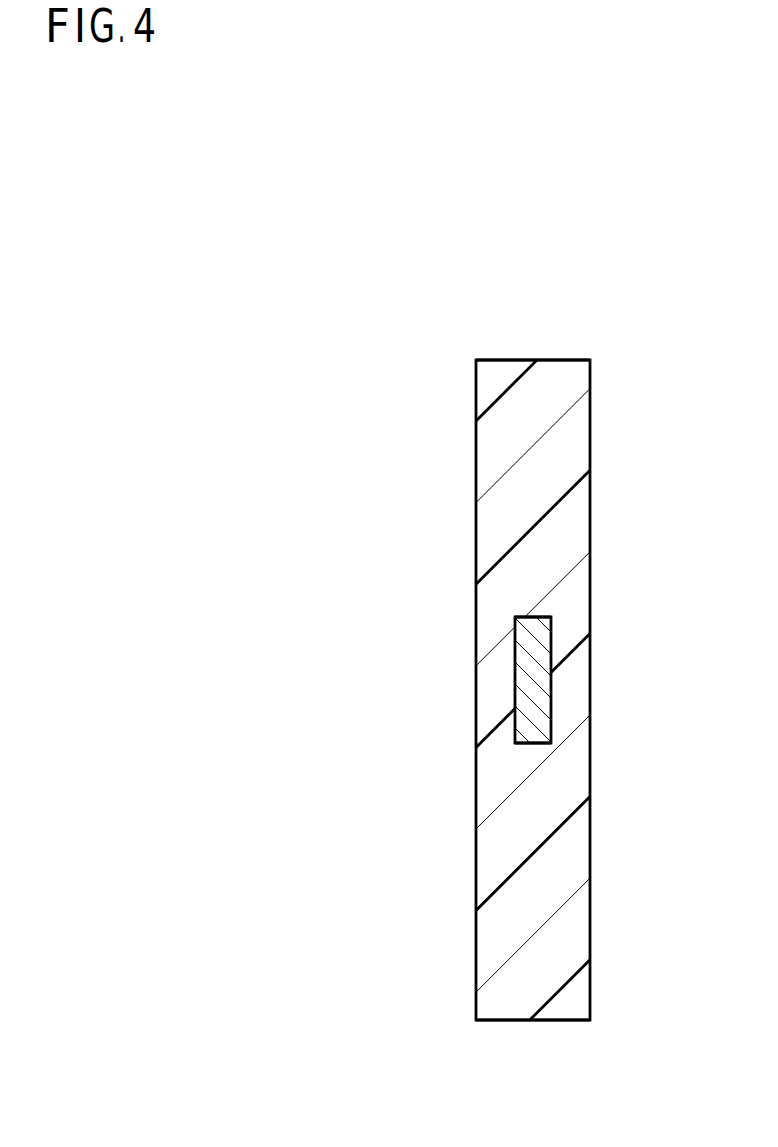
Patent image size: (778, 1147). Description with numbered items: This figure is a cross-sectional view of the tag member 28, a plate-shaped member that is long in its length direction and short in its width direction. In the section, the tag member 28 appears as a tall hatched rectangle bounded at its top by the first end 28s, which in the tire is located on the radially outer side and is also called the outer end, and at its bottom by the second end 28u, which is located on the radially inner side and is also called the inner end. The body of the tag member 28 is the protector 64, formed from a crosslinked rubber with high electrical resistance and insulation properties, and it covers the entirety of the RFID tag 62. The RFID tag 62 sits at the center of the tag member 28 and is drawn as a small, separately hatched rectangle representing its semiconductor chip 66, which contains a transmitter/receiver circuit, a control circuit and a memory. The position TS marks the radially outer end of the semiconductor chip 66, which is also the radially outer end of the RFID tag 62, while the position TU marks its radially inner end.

The tag member 28 is at (624, 320).
The first end 28s is at (519, 360).
The second end 28u is at (547, 1020).
The protector 64 is at (572, 532).
The RFID tag 62 is at (508, 642).
The semiconductor chip 66 is at (525, 682).
The radially outer end of the semiconductor chip TS is at (532, 617).
The radially inner end of the RFID tag TU is at (532, 745).